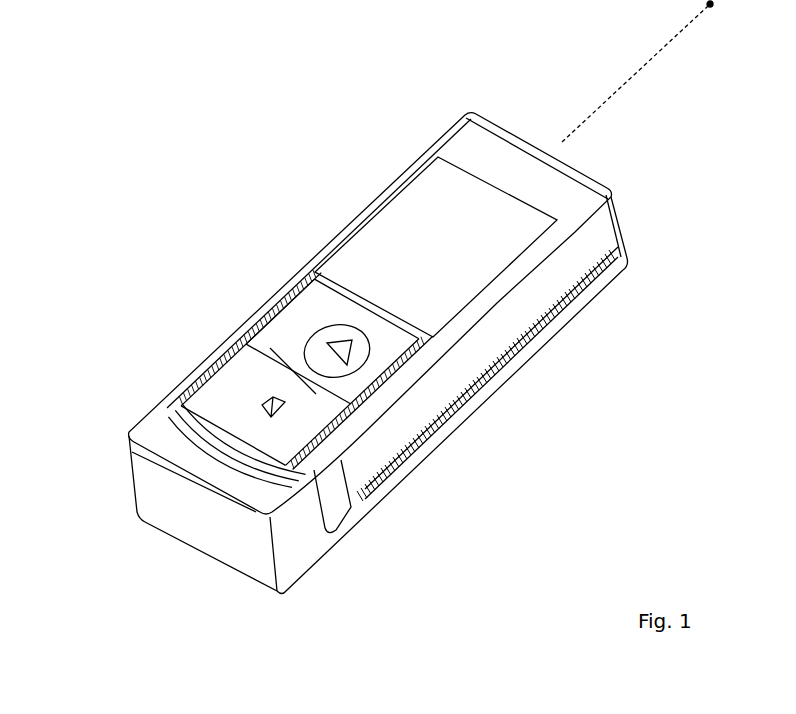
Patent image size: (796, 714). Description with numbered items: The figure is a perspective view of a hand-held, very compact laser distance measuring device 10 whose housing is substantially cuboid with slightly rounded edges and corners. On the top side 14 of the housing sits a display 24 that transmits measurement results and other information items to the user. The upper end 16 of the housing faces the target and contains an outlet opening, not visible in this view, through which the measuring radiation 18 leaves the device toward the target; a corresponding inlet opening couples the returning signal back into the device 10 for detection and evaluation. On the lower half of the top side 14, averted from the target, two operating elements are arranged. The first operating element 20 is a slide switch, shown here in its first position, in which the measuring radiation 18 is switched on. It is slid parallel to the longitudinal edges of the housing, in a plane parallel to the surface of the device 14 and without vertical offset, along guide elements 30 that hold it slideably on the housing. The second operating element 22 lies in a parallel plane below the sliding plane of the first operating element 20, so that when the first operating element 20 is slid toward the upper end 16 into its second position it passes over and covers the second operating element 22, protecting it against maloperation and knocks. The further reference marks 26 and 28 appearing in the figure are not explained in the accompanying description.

The distance measuring device 10 is at (430, 118).
The top side 14 is at (553, 194).
The upper end 16 is at (600, 163).
The measuring radiation 18 is at (630, 51).
The first operating element 20 is at (257, 398).
The second operating element 22 is at (332, 348).
The display 24 is at (405, 218).
The housing lower part 26 is at (116, 443).
The front end face 28 is at (212, 533).
The guide elements 30 is at (397, 362).